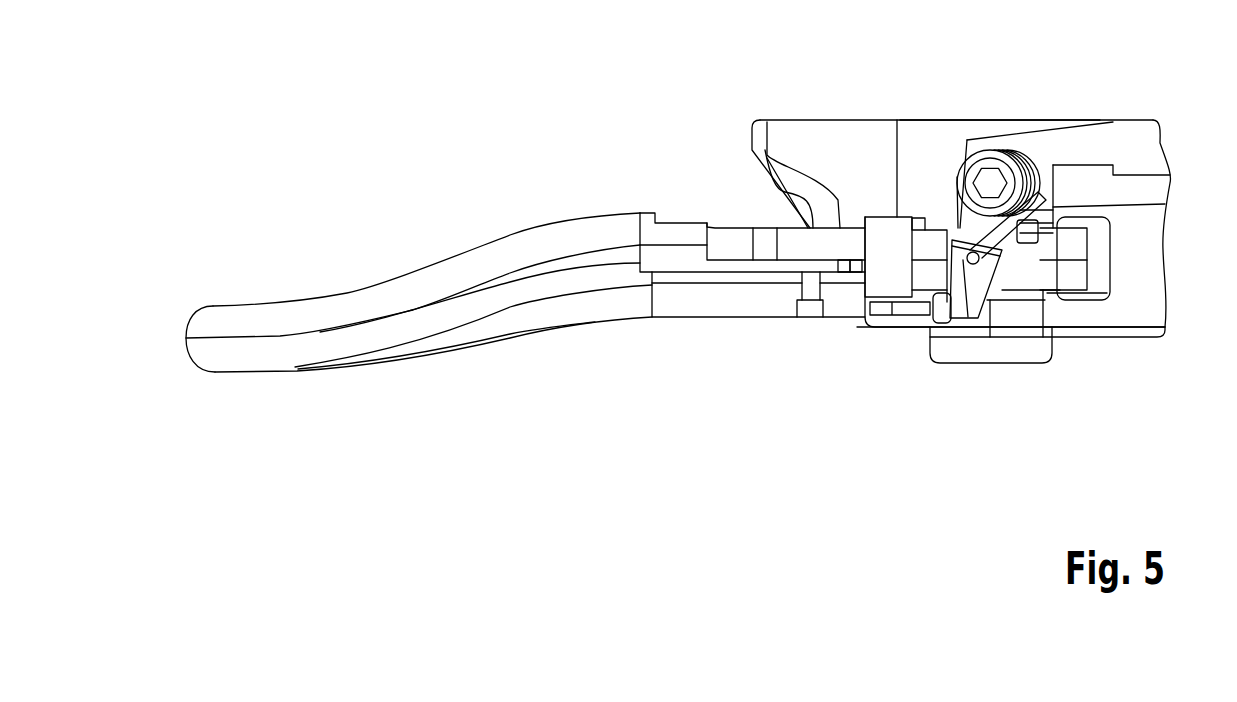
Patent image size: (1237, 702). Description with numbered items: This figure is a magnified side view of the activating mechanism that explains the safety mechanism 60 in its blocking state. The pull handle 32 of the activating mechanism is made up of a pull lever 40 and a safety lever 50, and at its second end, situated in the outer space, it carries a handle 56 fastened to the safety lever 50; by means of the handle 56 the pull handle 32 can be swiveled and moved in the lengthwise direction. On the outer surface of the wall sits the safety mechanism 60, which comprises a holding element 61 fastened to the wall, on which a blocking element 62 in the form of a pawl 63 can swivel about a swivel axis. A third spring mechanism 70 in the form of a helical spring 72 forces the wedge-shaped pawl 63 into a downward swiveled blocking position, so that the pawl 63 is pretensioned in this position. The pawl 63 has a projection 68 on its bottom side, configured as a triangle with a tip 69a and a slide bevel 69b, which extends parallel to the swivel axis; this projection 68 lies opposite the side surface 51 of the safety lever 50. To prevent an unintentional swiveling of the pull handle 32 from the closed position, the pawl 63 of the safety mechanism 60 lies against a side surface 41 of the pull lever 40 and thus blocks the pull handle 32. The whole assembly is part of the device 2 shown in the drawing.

The locking device 2 is at (997, 120).
The pull handle 32 is at (470, 240).
The pull lever 40 is at (700, 302).
The side surface 41 is at (920, 275).
The safety lever 50 is at (730, 240).
The side surface 51 is at (940, 228).
The handle 56 is at (300, 368).
The safety mechanism 60 is at (952, 150).
The holding element 61 is at (1057, 143).
The blocking element 62 is at (1011, 392).
The pawl 63 is at (960, 325).
The projection 68 is at (1025, 233).
The tip 69a is at (1040, 248).
The slide bevel 69b is at (1053, 210).
The third spring mechanism 70 is at (990, 304).
The helical spring 72 is at (960, 322).